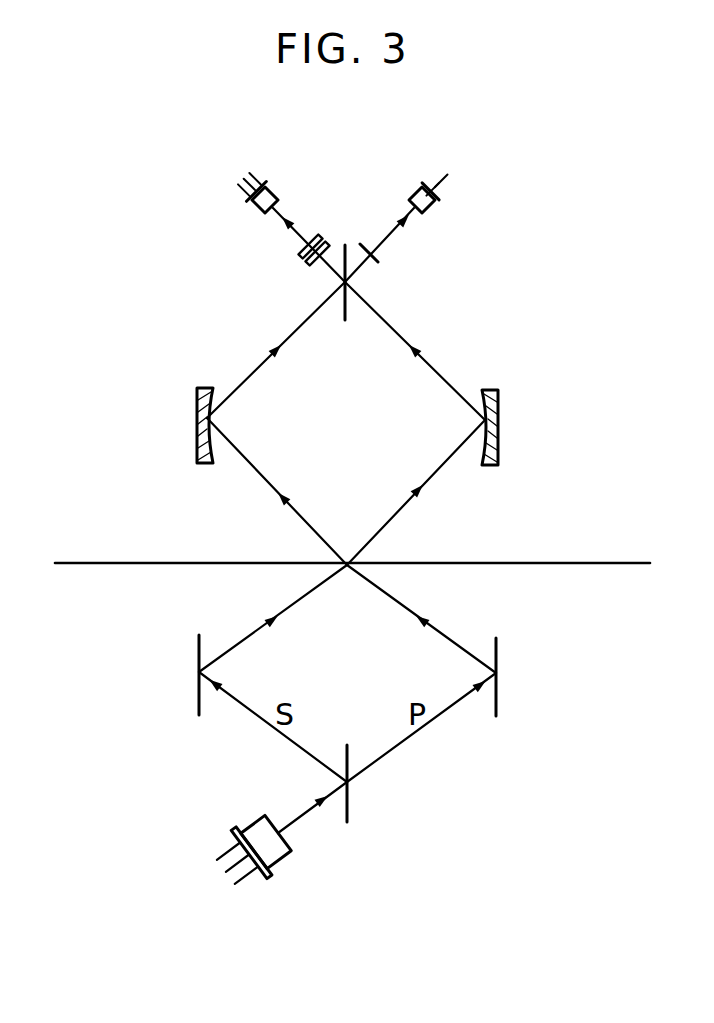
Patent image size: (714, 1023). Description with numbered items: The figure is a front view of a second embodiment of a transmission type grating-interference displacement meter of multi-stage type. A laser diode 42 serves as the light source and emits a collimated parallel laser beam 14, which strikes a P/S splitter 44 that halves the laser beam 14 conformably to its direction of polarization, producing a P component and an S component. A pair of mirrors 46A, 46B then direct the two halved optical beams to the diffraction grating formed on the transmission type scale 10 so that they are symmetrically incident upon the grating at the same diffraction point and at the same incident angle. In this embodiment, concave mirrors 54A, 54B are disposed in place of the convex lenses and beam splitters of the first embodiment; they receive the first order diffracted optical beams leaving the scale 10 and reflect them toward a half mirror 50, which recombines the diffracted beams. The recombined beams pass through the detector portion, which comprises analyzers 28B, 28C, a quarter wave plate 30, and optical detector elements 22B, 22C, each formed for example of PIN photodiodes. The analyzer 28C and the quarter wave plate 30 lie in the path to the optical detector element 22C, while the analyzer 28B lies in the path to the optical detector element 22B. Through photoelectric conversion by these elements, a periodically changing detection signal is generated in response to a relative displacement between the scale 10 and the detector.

The transmission type scale 10 is at (183, 562).
The laser beam 14 is at (312, 812).
The optical detector element 22B is at (417, 190).
The optical detector element 22C is at (276, 192).
The analyzer 28B is at (370, 258).
The analyzer 28C is at (300, 246).
The quarter wave plate 30 is at (306, 266).
The laser diode 42 is at (272, 876).
The P/S splitter 44 is at (350, 800).
The mirror 46A is at (498, 708).
The mirror 46B is at (197, 706).
The half mirror 50 is at (345, 312).
The concave mirror 54A is at (196, 408).
The concave mirror 54B is at (500, 408).